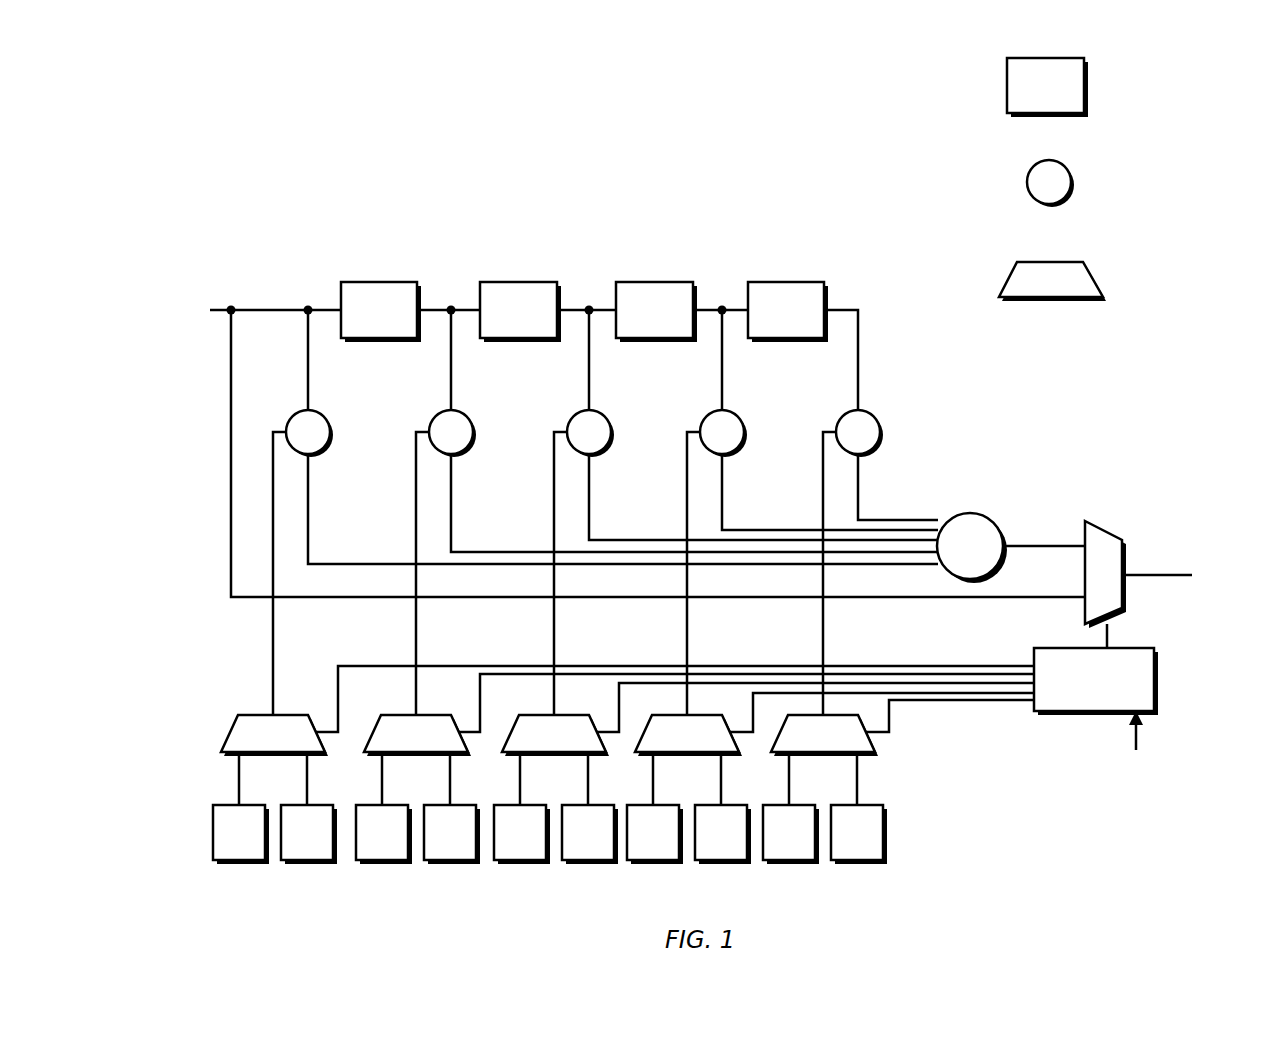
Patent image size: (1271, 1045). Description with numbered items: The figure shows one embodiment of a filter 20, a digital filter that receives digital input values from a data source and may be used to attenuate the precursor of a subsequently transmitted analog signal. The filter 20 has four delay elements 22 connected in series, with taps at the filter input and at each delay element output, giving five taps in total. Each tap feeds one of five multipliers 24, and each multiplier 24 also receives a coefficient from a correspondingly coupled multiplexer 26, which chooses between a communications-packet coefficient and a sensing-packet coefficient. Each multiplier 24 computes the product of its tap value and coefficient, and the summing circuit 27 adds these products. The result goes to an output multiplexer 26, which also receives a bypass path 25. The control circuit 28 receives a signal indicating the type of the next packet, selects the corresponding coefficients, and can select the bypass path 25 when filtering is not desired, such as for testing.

The filter 20 is at (551, 143).
The delay element 22 is at (1091, 57).
The multiplier 24 is at (1070, 168).
The bypass path 25 is at (231, 602).
The multiplexer 26 is at (1092, 262).
The summing circuit 27 is at (965, 501).
The control circuit 28 is at (1096, 681).